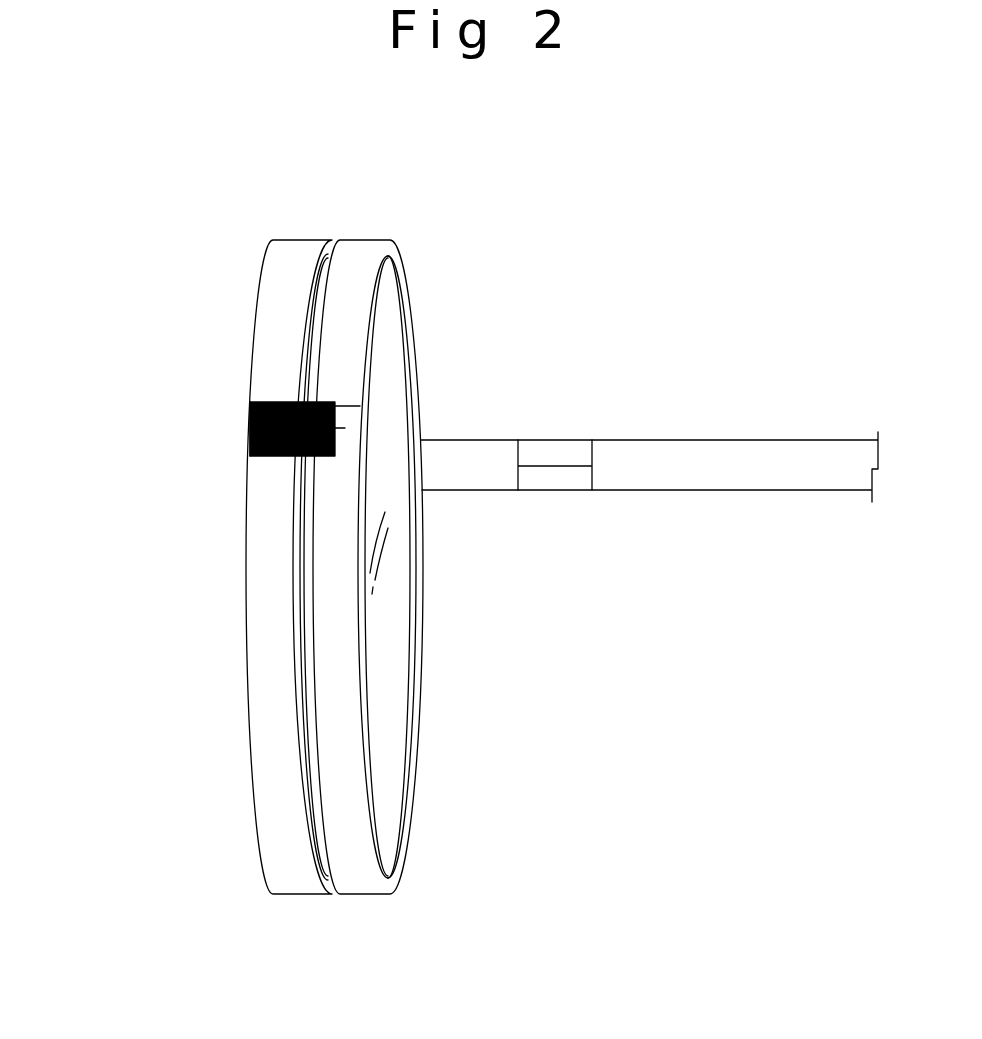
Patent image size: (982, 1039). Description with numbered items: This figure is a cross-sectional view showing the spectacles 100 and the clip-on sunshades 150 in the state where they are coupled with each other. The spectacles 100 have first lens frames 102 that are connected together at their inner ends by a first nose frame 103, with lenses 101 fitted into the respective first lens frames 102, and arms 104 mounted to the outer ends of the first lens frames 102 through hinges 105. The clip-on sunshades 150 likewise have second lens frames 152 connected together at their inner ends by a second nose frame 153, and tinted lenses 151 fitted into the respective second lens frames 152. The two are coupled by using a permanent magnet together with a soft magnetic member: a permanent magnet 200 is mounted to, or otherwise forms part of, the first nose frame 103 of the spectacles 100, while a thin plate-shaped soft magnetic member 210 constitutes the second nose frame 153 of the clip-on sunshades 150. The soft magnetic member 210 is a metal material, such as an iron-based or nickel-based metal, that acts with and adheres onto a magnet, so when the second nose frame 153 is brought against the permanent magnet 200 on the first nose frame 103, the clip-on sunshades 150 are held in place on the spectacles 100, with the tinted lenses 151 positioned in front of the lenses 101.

The spectacles 100 is at (595, 567).
The lens 101 is at (395, 720).
The first lens frame 102 is at (418, 764).
The first nose frame 103 is at (345, 428).
The arm 104 is at (757, 490).
The hinge 105 is at (592, 490).
The clip-on sunshades 150 is at (207, 567).
The tinted lens 151 is at (315, 840).
The second lens frame 152 is at (260, 807).
The second nose frame 153 is at (240, 425).
The permanent magnet 200 is at (275, 457).
The soft magnetic member 210 is at (280, 402).